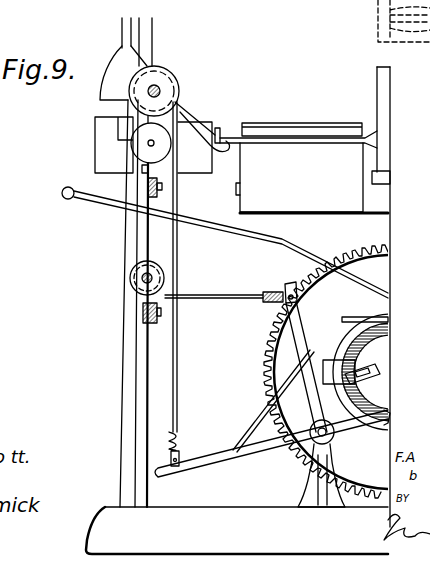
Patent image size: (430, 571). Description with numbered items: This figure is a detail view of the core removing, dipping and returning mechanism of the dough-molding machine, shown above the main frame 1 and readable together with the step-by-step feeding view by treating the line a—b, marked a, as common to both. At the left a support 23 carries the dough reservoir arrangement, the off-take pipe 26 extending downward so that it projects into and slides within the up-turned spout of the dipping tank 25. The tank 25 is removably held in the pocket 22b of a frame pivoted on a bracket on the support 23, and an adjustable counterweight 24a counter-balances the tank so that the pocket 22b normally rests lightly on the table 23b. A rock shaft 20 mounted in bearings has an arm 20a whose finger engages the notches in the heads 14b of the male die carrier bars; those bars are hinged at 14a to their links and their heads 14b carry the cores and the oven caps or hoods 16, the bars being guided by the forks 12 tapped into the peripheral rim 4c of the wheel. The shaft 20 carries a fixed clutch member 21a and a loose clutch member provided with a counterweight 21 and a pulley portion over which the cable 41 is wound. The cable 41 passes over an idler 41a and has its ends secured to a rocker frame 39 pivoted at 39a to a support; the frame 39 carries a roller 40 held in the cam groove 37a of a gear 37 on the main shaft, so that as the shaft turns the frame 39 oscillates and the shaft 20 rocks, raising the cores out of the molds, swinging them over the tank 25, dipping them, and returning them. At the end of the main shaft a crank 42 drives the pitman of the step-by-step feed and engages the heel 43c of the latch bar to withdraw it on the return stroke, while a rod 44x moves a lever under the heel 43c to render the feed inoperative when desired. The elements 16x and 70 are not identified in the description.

The main frame 1 is at (237, 530).
The off-take pipe 26 is at (122, 33).
The counterweight 21 is at (123, 73).
The support 23 is at (151, 36).
The fixed clutch member 21a is at (166, 74).
The rock shaft 20 is at (161, 92).
The arm 20a is at (188, 126).
The dipping tank 25 is at (98, 122).
The adjustable counterweight 24a is at (141, 144).
The pocket 22b is at (141, 170).
The hinge 14a is at (222, 128).
The oven caps or hoods 16 is at (300, 124).
The head 14b is at (278, 142).
The box 16x is at (301, 177).
The table 23b is at (224, 188).
The bed plate 70 is at (329, 214).
The fork 12 is at (385, 111).
The line a-b a is at (390, 60).
The peripheral rim 4c is at (389, 183).
The rod 44x is at (225, 242).
The cable 41 is at (178, 193).
The idler 41a is at (165, 279).
The gear 37 is at (272, 350).
The crank 42 is at (378, 368).
The cam groove 37a is at (350, 330).
The heel 43c is at (362, 318).
The rocker frame 39 is at (300, 316).
The roller 40 is at (388, 416).
The pivot 39a is at (333, 439).